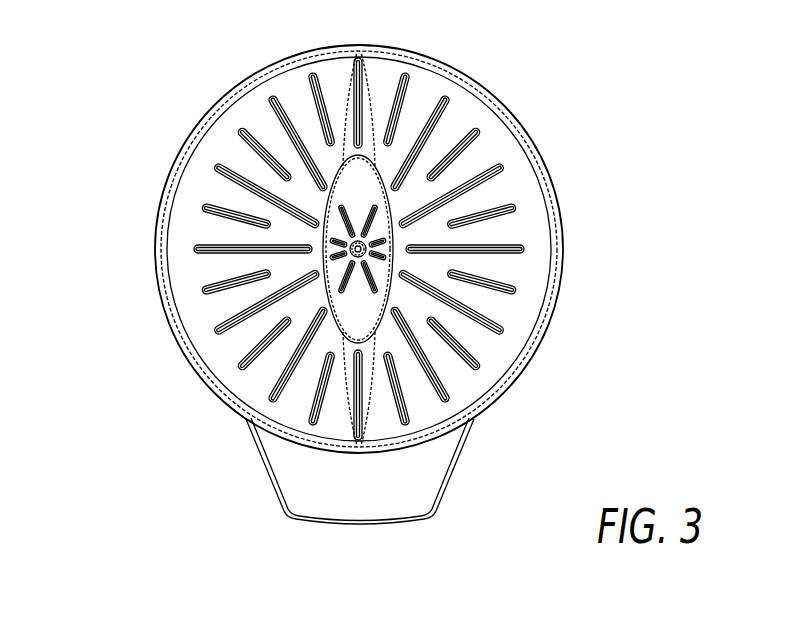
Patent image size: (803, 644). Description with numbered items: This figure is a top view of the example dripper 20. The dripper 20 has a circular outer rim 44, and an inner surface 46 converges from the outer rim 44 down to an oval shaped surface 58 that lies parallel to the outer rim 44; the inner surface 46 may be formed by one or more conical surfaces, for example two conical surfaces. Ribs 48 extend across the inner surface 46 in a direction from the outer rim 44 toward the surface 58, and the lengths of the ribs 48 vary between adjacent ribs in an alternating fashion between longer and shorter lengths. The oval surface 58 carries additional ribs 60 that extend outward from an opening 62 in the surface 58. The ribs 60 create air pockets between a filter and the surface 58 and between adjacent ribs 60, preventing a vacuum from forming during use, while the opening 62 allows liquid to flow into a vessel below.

The dripper 20 is at (103, 90).
The outer rim 44 is at (565, 210).
The inner surface 46 is at (478, 157).
The ribs 48 is at (427, 117).
The oval shaped surface 58 is at (359, 180).
The ribs 60 is at (348, 309).
The opening 62 is at (366, 256).